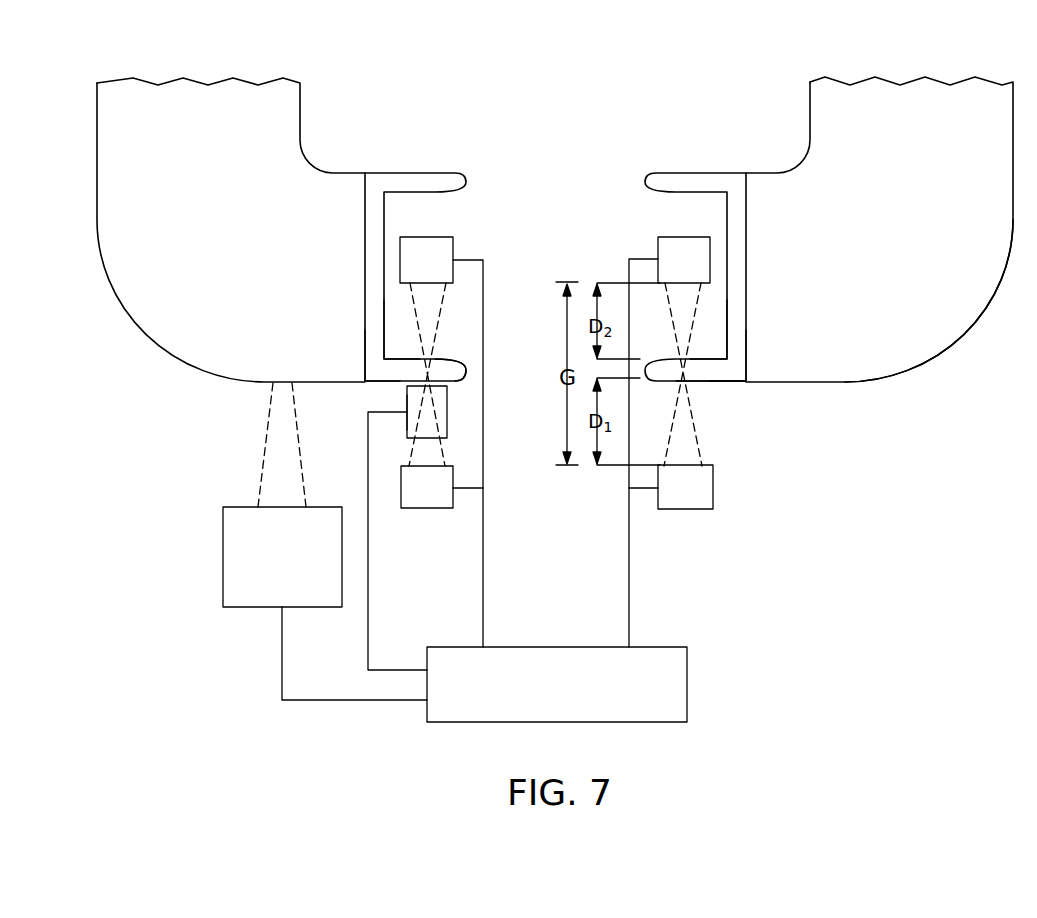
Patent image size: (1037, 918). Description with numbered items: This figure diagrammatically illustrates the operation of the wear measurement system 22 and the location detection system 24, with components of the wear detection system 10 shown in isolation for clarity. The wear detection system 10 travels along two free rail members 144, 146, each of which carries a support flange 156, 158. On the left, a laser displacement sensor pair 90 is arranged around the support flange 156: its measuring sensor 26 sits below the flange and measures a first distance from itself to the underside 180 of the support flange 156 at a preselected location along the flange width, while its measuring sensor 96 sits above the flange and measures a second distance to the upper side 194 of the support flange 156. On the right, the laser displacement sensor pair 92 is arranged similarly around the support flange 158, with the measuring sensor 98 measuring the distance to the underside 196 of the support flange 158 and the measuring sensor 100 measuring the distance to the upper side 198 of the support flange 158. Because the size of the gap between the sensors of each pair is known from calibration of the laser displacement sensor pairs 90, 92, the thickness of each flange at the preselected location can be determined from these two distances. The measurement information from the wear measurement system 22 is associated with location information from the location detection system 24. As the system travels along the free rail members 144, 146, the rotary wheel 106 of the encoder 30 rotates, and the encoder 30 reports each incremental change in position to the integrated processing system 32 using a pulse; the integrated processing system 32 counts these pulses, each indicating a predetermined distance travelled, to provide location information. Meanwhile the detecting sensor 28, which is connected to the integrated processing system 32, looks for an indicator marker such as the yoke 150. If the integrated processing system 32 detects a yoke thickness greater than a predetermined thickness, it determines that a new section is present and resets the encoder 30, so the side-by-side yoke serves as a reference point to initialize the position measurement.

The wear detection system 10 is at (603, 98).
The wear measurement system 22 is at (509, 178).
The location detection system 24 is at (237, 452).
The measuring sensor 26 is at (428, 503).
The detecting sensor 28 is at (233, 565).
The encoder 30 is at (392, 397).
The integrated processing system 32 is at (680, 678).
The laser displacement sensor pair 90 is at (430, 155).
The laser displacement sensor pair 92 is at (696, 155).
The measuring sensor 96 is at (445, 252).
The measuring sensor 98 is at (692, 505).
The measuring sensor 100 is at (660, 252).
The rotary wheel 106 is at (447, 422).
The free rail member 144 is at (334, 118).
The free rail member 146 is at (776, 118).
The yoke 150 is at (932, 322).
The support flange 156 is at (376, 371).
The support flange 158 is at (737, 369).
The underside 180 is at (462, 382).
The upper side 194 is at (400, 354).
The underside 196 is at (718, 382).
The upper side 198 is at (712, 352).